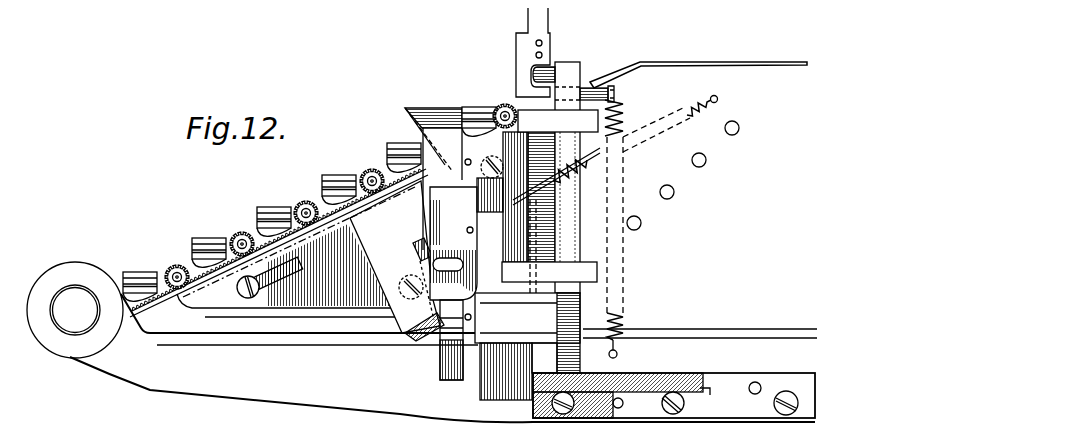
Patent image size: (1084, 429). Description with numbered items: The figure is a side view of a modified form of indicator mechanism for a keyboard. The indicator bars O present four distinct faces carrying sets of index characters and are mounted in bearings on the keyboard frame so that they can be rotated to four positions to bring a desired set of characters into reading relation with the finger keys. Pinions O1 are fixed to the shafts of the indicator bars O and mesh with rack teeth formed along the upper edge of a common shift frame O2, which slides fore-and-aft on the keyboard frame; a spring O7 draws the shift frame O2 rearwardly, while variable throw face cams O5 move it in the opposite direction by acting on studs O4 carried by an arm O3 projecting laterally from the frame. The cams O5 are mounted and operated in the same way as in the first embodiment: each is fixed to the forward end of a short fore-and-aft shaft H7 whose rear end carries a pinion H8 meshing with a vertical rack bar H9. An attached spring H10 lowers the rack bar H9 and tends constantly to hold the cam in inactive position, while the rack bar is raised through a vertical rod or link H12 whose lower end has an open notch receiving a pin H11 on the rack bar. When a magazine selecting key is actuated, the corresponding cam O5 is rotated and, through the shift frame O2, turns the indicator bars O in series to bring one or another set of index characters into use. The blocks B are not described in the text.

The type bar block B is at (139, 275).
The indicator bar O is at (168, 270).
The pinion O1 is at (296, 203).
The shift frame O2 is at (279, 243).
The arm O3 is at (373, 245).
The stud O4 is at (423, 243).
The variable throw face cam O5 is at (418, 127).
The spring O7 is at (691, 112).
The fore-and-aft shaft H7 is at (462, 153).
The pinion H8 is at (581, 308).
The vertical rack bar H9 is at (575, 186).
The spring H10 is at (624, 323).
The pin H11 is at (553, 69).
The vertical rod or link H12 is at (547, 29).